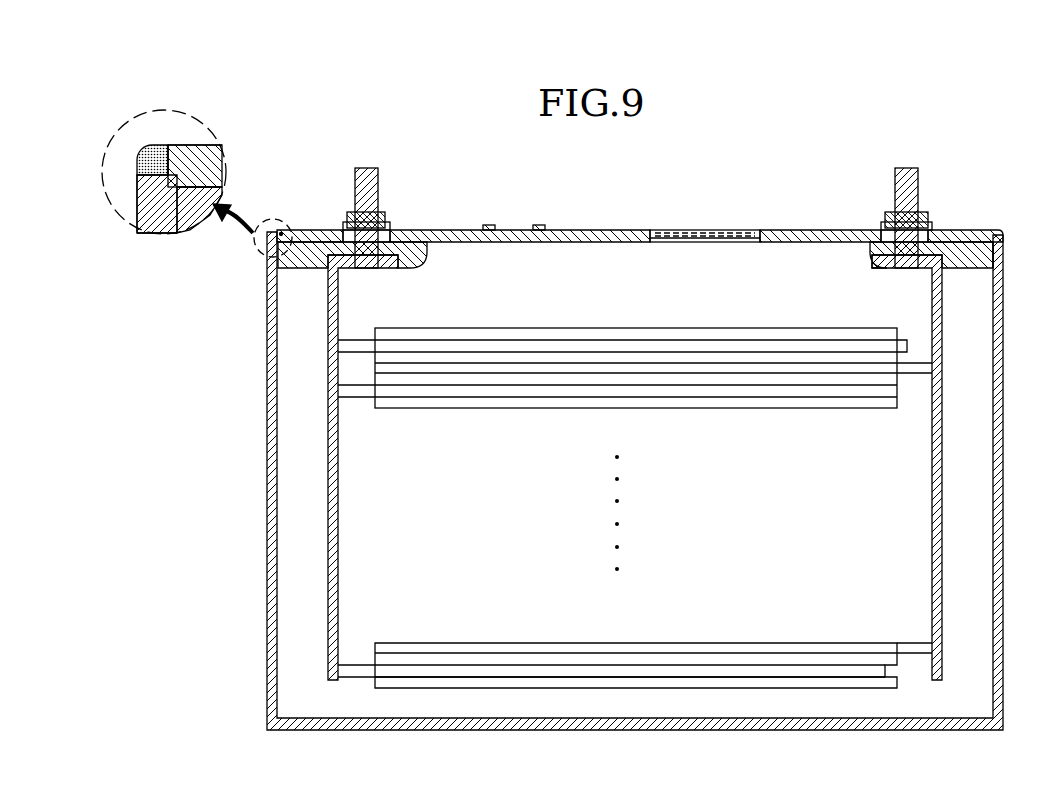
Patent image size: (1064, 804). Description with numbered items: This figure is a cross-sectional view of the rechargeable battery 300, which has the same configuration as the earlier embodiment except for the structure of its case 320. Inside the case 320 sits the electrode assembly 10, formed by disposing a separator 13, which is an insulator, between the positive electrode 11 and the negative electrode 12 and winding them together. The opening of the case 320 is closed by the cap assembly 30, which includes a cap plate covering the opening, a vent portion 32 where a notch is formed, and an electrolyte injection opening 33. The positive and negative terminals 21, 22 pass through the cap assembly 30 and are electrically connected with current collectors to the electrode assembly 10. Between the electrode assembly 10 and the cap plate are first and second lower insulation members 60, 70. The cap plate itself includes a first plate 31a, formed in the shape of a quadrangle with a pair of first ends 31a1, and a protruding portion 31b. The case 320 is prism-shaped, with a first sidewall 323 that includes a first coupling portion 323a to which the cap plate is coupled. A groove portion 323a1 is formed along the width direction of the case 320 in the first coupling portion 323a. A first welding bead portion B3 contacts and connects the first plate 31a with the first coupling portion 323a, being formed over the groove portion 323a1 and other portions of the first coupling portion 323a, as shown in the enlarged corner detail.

The rechargeable battery 300 is at (788, 150).
The electrode assembly 10 is at (635, 557).
The positive electrode 11 is at (360, 672).
The negative electrode 12 is at (483, 650).
The separator 13 is at (582, 683).
The positive terminal 21 is at (365, 188).
The negative terminal 22 is at (907, 188).
The cap assembly 30 is at (568, 230).
The first plate 31a is at (188, 147).
The first ends 31a1 is at (178, 147).
The protruding portion 31b is at (222, 188).
The vent portion 32 is at (717, 229).
The electrolyte injection opening 33 is at (516, 229).
The first lower insulation member 60 is at (266, 255).
The second lower insulation member 70 is at (985, 256).
The case 320 is at (267, 633).
The first sidewall 323 is at (138, 213).
The first coupling portion 323a is at (152, 233).
The groove portion 323a1 is at (137, 190).
The first welding bead portion B3 is at (137, 170).